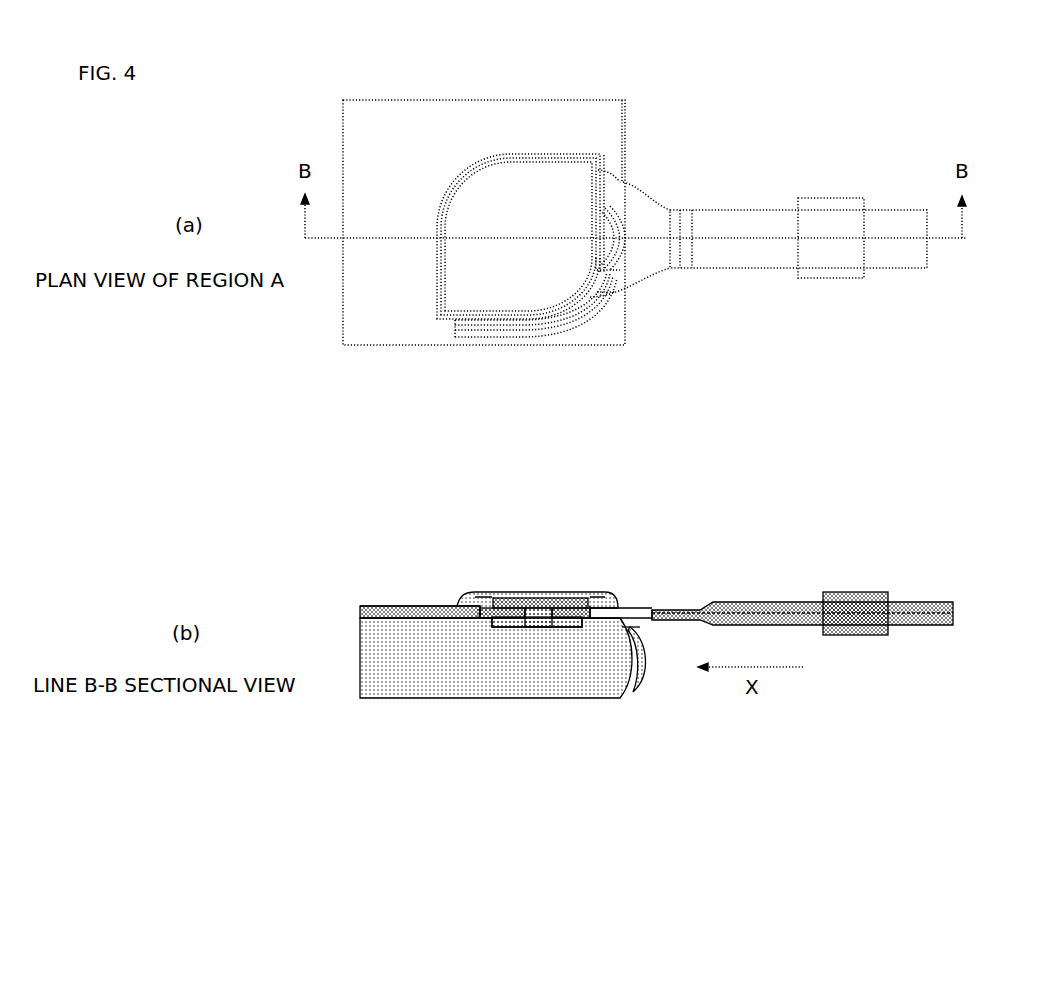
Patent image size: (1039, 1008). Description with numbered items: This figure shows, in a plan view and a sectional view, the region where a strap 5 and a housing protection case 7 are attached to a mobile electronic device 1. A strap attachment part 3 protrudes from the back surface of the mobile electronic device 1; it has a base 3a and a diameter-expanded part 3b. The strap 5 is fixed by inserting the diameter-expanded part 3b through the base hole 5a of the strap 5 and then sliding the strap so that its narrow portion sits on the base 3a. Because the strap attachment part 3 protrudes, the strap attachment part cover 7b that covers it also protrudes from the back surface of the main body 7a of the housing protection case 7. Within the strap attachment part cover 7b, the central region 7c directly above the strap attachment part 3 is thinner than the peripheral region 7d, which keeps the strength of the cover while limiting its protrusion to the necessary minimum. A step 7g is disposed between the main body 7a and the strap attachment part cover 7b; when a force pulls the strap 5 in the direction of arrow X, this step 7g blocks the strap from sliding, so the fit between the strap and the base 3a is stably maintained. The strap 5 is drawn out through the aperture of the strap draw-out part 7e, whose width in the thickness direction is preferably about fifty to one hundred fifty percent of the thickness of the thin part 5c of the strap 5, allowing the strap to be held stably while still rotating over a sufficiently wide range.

The mobile electronic device 1 is at (457, 688).
The strap attachment part 3 is at (610, 520).
The base 3a is at (537, 615).
The diameter-expanded part 3b is at (560, 600).
The strap 5 is at (900, 257).
The base hole 5a is at (627, 240).
The thin part 5c is at (668, 612).
The housing protection case 7 is at (320, 127).
The main body 7a is at (452, 115).
The strap attachment part cover 7b is at (498, 290).
The central region 7c is at (513, 597).
The peripheral region 7d is at (481, 600).
The strap draw-out part 7e is at (553, 310).
The step 7g is at (470, 600).